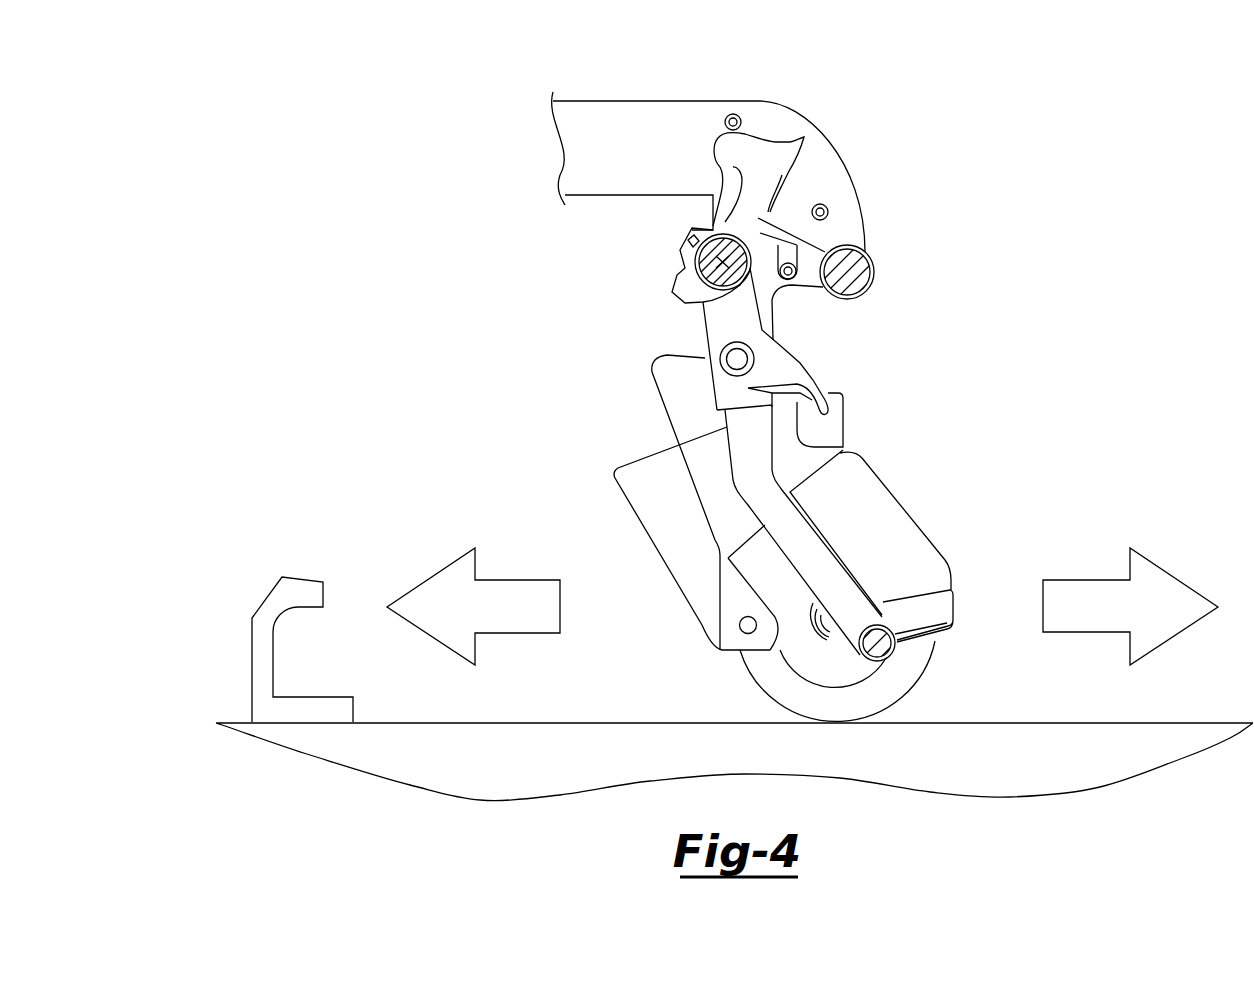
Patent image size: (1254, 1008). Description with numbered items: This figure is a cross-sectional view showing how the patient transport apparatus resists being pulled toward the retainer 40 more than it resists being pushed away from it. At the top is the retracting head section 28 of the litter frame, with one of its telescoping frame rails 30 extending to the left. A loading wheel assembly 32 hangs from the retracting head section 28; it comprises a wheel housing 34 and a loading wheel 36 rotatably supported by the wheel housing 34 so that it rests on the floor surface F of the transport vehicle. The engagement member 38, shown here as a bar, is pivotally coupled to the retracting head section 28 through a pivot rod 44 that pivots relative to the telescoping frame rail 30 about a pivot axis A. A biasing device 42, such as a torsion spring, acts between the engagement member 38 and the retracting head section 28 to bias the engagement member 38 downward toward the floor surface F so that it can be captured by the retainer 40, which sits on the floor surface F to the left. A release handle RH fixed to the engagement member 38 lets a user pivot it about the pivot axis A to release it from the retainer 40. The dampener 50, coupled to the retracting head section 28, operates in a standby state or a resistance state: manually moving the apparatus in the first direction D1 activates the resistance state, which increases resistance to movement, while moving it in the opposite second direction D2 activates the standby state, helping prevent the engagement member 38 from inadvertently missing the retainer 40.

The retracting head section 28 is at (880, 119).
The telescoping frame rail 30 is at (604, 118).
The loading wheel assembly 32 is at (885, 393).
The wheel housing 34 is at (947, 483).
The loading wheel 36 is at (920, 690).
The engagement member 38 is at (880, 657).
The retainer 40 is at (225, 577).
The biasing device 42 is at (696, 250).
The pivot rod 44 is at (702, 313).
The dampener 50 is at (742, 633).
The pivot axis A is at (706, 265).
The release handle RH is at (795, 368).
The first direction D1 is at (517, 580).
The second direction D2 is at (1087, 580).
The floor surface F is at (1212, 722).